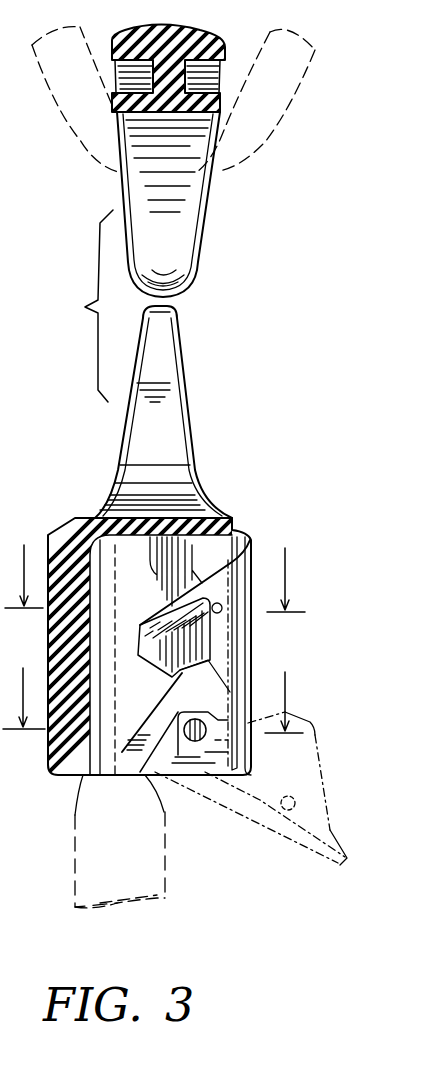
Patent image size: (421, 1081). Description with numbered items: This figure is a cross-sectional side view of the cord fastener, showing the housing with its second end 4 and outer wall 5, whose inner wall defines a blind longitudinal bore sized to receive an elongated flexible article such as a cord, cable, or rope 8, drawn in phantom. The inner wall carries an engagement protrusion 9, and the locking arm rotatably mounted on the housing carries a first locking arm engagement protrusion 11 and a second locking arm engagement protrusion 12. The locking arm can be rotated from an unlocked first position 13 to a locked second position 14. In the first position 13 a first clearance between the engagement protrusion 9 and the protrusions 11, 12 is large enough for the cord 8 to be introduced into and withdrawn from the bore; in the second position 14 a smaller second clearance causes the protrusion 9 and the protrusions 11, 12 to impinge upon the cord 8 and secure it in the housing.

The second end 4 is at (155, 560).
The outer wall 5 is at (153, 683).
The cord, cable, or rope 8 is at (167, 870).
The engagement protrusion 9 is at (95, 690).
The first locking arm engagement protrusion 11 is at (135, 752).
The second locking arm engagement protrusion 12 is at (137, 638).
The unlocked first position 13 is at (274, 808).
The locked second position 14 is at (248, 537).